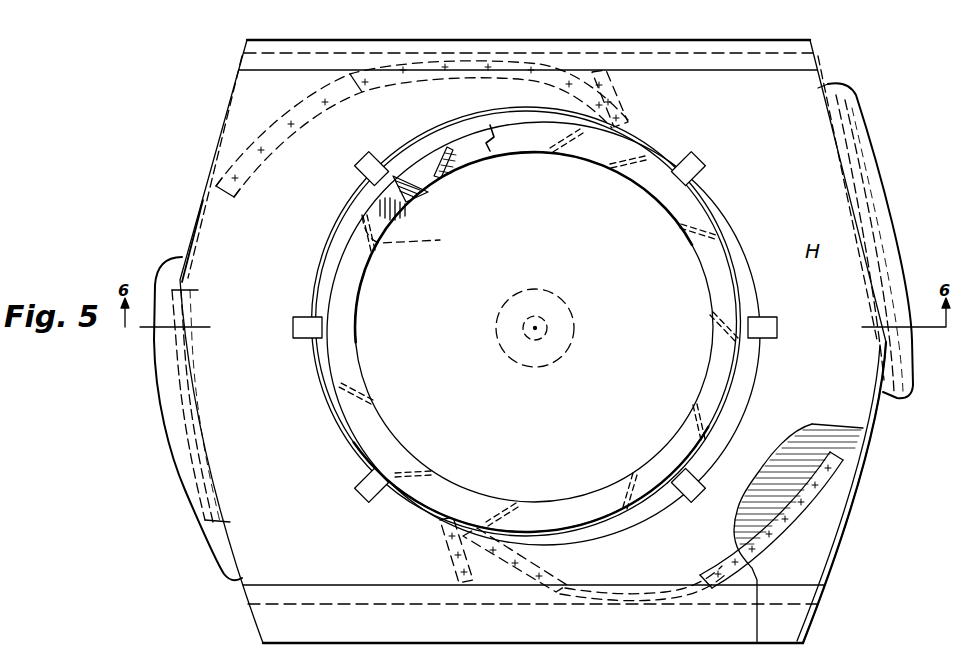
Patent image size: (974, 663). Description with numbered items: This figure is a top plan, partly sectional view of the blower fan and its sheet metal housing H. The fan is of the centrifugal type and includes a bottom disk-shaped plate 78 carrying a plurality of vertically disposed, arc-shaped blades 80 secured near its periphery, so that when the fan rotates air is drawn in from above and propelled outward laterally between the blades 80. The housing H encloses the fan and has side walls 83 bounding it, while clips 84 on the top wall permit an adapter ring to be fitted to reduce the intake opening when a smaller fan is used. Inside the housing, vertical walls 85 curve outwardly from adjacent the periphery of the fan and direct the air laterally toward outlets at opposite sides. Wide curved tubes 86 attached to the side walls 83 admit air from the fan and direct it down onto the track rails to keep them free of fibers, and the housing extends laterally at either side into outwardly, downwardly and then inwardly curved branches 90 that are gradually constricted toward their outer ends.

The bottom disk-shaped plate 78 is at (430, 380).
The arc-shaped blades 80 is at (441, 176).
The side walls 83 is at (197, 205).
The clips 84 is at (696, 166).
The vertical walls 85 is at (355, 85).
The wide curved tubes 86 is at (158, 400).
The curved branches 90 is at (818, 58).